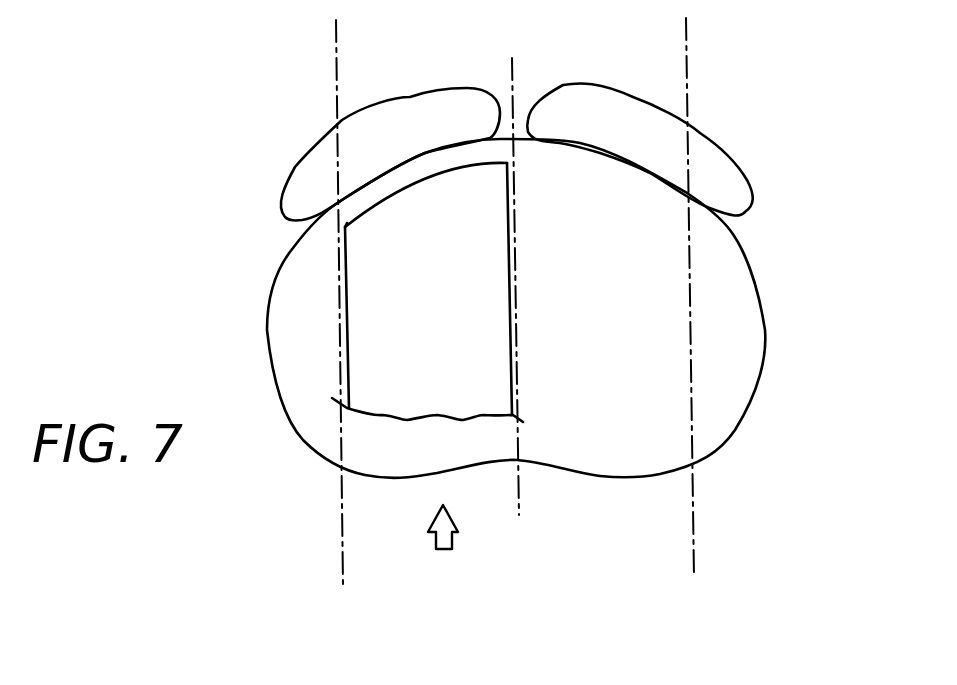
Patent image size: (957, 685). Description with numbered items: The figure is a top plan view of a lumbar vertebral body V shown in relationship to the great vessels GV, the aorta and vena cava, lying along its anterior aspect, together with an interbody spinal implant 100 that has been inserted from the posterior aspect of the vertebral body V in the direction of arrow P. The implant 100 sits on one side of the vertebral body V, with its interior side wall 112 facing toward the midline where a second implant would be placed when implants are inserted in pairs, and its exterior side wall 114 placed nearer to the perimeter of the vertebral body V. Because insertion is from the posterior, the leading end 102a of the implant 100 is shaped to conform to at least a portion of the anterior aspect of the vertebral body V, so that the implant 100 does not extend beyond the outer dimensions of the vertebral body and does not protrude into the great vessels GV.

The interbody spinal implant 100 is at (412, 229).
The leading end 102a is at (412, 183).
The interior side wall 112 is at (347, 317).
The exterior side wall 114 is at (512, 300).
The great vessels GV is at (315, 138).
The vertebral body V is at (737, 428).
The arrow P is at (452, 540).